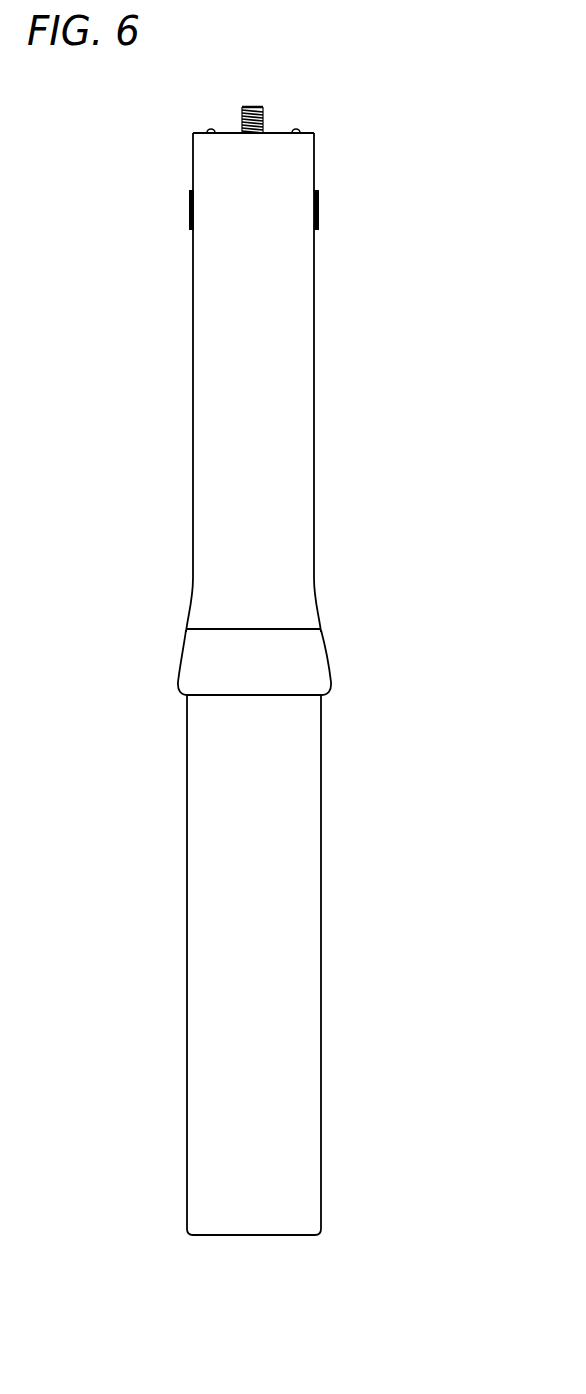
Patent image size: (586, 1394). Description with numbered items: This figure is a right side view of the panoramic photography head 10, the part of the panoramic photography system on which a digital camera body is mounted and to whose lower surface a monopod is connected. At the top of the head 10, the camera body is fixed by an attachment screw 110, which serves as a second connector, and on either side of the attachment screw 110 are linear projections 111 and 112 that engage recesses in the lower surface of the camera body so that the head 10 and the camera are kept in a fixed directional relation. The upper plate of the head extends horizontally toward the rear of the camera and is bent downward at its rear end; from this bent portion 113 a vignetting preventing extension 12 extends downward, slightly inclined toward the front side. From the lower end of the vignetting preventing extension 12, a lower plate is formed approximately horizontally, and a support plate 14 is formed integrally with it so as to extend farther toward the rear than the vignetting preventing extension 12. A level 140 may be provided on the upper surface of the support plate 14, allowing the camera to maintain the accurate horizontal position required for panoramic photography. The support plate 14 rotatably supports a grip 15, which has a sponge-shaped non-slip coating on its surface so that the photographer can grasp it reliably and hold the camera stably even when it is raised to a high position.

The panoramic photography head 10 is at (462, 254).
The vignetting preventing extension 12 is at (315, 365).
The support plate 14 is at (253, 649).
The grip 15 is at (322, 908).
The attachment screw 110 is at (239, 110).
The linear projection 111 is at (295, 128).
The linear projection 112 is at (212, 128).
The bent portion 113 is at (300, 178).
The level 140 is at (273, 627).